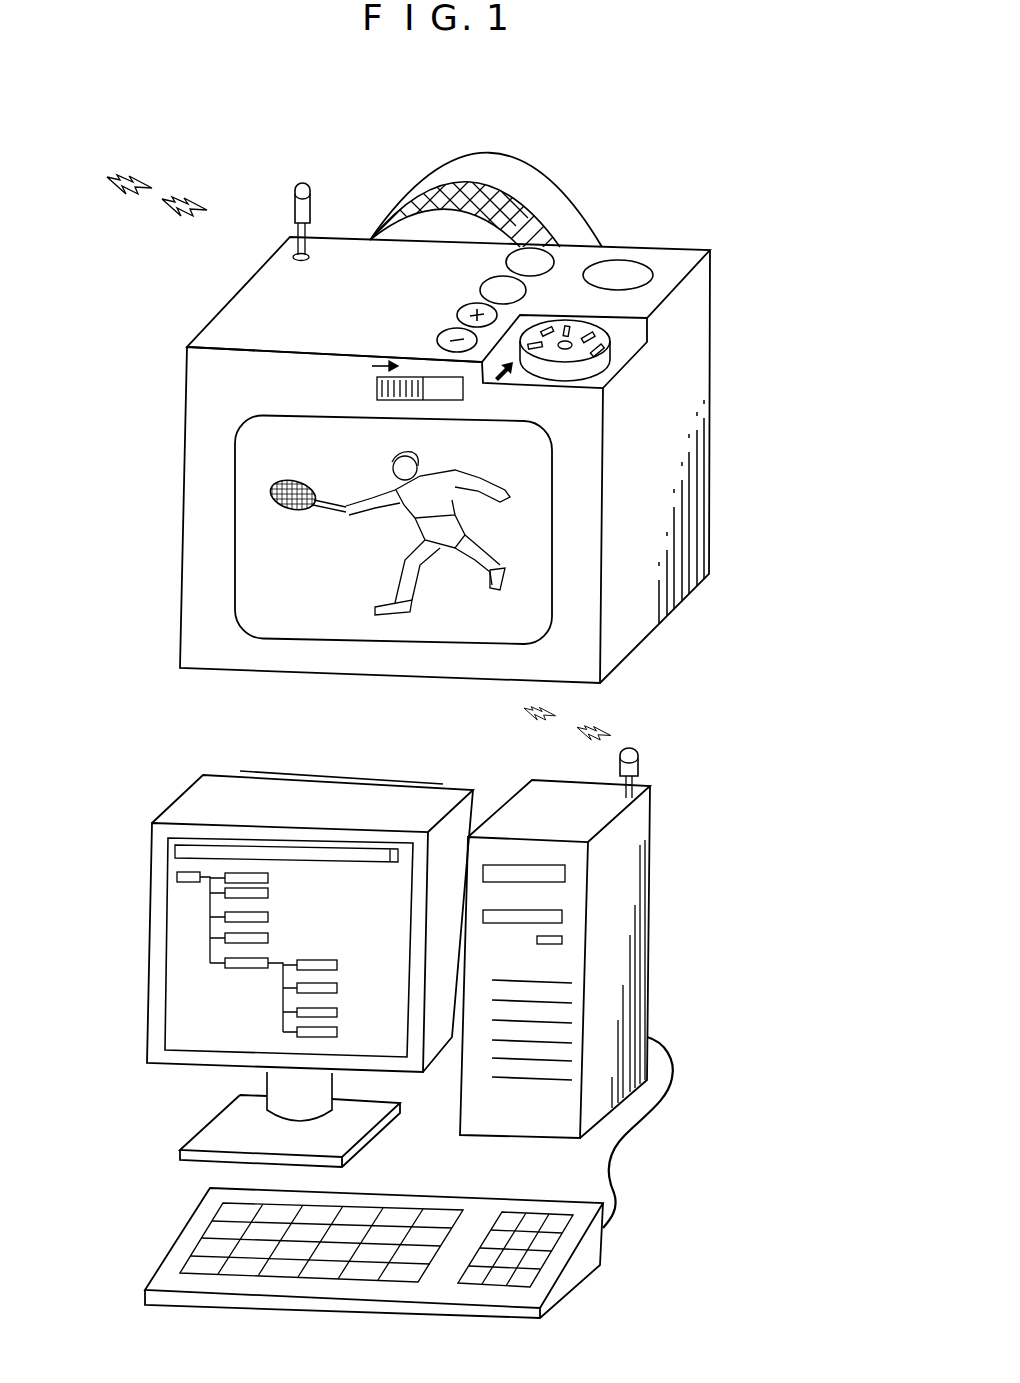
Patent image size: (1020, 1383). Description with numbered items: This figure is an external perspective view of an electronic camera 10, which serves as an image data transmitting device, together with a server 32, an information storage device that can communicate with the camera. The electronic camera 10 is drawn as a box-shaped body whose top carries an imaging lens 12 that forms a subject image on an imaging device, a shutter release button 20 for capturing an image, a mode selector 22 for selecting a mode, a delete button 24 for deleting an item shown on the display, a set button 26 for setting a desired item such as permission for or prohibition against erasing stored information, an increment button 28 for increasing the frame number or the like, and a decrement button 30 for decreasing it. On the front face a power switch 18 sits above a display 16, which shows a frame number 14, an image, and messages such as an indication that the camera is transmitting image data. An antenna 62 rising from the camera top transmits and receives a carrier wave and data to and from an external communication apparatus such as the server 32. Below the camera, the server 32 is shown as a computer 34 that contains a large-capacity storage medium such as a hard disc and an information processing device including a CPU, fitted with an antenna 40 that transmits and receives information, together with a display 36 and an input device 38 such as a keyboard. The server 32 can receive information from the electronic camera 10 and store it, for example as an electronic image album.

The electronic camera 10 is at (736, 311).
The imaging lens 12 is at (552, 190).
The frame number 14 is at (335, 418).
The display 16 is at (258, 560).
The power switch 18 is at (370, 380).
The shutter release button 20 is at (641, 272).
The mode selector 22 is at (606, 353).
The delete button 24 is at (563, 258).
The set button 26 is at (478, 278).
The increment button 28 is at (455, 304).
The decrement button 30 is at (430, 340).
The server 32 is at (678, 967).
The computer 34 is at (655, 882).
The display 36 is at (207, 1042).
The input device 38 is at (193, 1212).
The antenna 40 is at (640, 768).
The antenna 62 is at (293, 200).